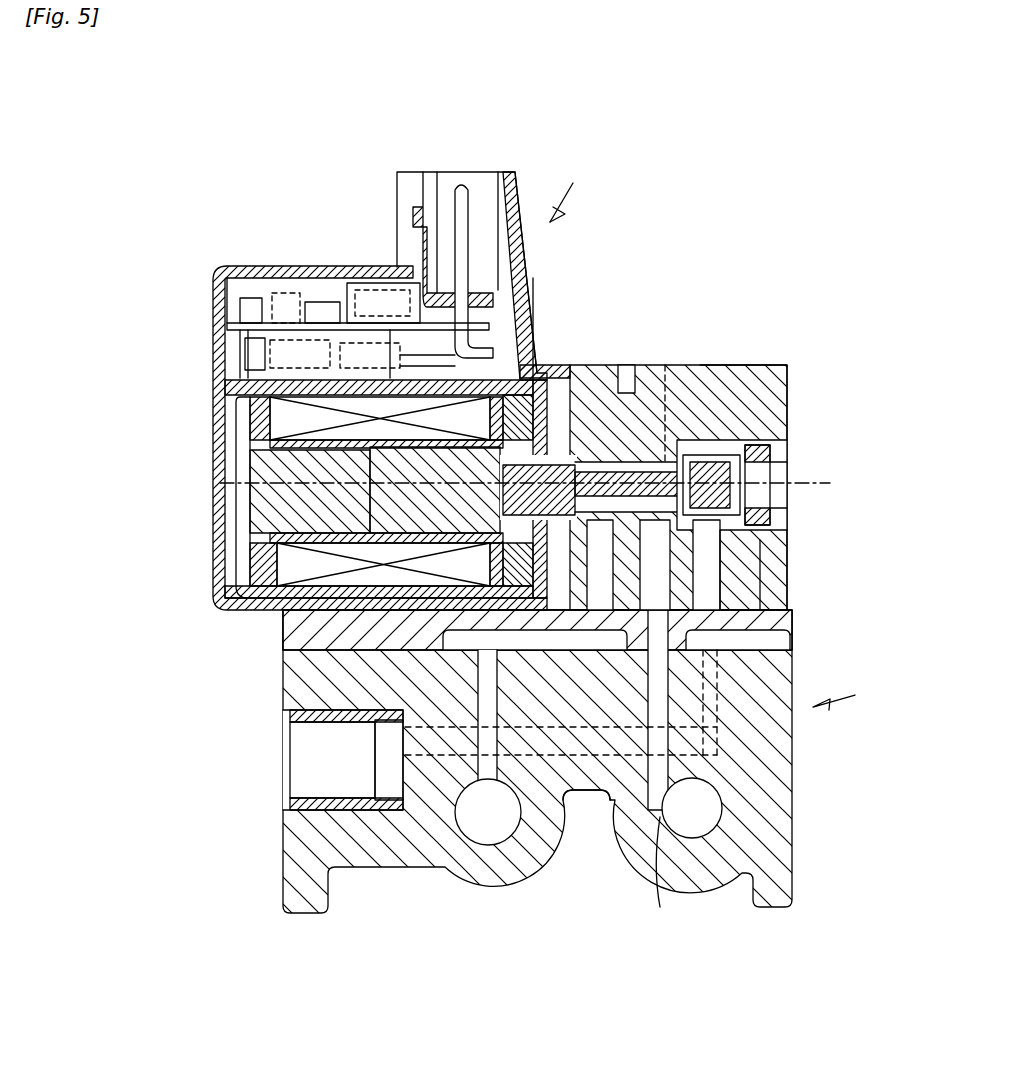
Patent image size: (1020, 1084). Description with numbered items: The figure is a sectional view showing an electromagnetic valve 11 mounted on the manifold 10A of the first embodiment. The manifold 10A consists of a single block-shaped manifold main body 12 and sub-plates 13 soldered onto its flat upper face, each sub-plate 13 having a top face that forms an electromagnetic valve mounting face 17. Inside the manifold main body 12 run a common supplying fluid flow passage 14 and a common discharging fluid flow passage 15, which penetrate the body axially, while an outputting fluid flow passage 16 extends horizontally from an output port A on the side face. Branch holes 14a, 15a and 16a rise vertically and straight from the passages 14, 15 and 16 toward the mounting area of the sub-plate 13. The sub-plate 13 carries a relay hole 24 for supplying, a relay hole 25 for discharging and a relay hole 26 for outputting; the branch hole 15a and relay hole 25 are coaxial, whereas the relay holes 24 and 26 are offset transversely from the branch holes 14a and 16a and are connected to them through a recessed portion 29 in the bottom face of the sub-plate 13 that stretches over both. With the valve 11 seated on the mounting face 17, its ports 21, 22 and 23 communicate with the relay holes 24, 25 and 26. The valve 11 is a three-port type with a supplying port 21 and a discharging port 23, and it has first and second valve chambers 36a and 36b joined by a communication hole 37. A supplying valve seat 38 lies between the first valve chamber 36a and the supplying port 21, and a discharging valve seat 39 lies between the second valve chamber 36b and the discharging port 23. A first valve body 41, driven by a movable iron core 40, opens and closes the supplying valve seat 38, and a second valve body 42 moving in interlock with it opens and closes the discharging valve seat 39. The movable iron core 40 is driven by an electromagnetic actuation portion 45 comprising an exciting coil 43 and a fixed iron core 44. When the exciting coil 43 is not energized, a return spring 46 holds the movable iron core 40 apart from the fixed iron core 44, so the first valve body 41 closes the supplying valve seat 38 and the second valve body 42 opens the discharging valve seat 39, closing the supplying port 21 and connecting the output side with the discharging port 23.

The manifold 10A is at (856, 697).
The electromagnetic valve 11 is at (568, 189).
The manifold main body 12 is at (780, 818).
The sub-plate 13 is at (300, 635).
The common supplying fluid flow passage 14 is at (493, 818).
The branch hole for supplying 14a is at (483, 763).
The common discharging fluid flow passage 15 is at (693, 808).
The branch hole for discharging 15a is at (660, 873).
The outputting fluid flow passage 16 is at (580, 737).
The branch hole for outputting 16a is at (733, 713).
The electromagnetic valve mounting face 17 is at (763, 580).
The supplying port 21 is at (612, 601).
The port 22 is at (668, 601).
The discharging port 23 is at (718, 601).
The relay hole for supplying 24 is at (593, 605).
The relay hole for discharging 25 is at (740, 713).
The relay hole for outputting 26 is at (777, 618).
The recessed portion 29 is at (455, 641).
The first valve chamber 36a is at (600, 365).
The second valve chamber 36b is at (712, 365).
The communication hole 37 is at (665, 365).
The supplying valve seat 38 is at (606, 365).
The discharging valve seat 39 is at (787, 458).
The movable iron core 40 is at (390, 478).
The first valve body 41 is at (547, 370).
The second valve body 42 is at (745, 490).
The exciting coil 43 is at (277, 420).
The fixed iron core 44 is at (287, 477).
The electromagnetic actuation portion 45 is at (196, 302).
The return spring 46 is at (413, 440).
The output port A is at (322, 752).